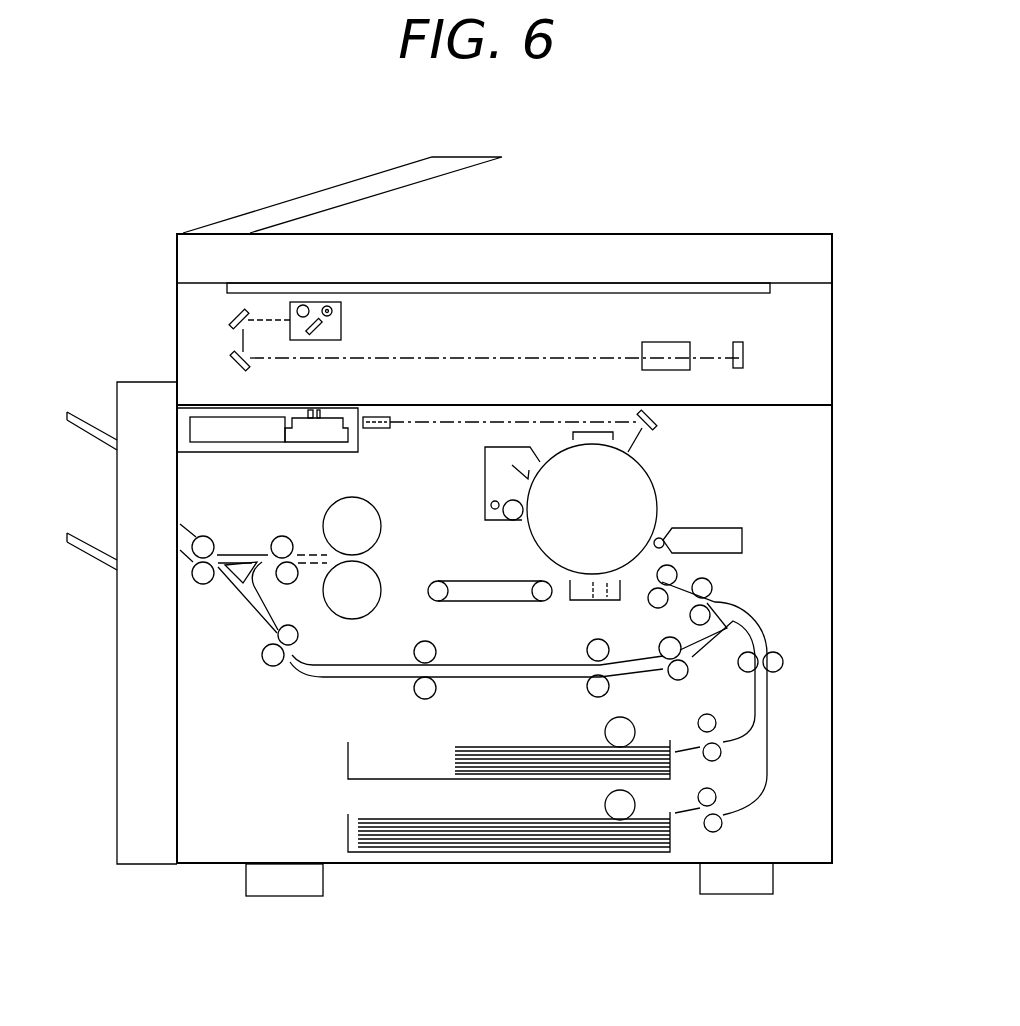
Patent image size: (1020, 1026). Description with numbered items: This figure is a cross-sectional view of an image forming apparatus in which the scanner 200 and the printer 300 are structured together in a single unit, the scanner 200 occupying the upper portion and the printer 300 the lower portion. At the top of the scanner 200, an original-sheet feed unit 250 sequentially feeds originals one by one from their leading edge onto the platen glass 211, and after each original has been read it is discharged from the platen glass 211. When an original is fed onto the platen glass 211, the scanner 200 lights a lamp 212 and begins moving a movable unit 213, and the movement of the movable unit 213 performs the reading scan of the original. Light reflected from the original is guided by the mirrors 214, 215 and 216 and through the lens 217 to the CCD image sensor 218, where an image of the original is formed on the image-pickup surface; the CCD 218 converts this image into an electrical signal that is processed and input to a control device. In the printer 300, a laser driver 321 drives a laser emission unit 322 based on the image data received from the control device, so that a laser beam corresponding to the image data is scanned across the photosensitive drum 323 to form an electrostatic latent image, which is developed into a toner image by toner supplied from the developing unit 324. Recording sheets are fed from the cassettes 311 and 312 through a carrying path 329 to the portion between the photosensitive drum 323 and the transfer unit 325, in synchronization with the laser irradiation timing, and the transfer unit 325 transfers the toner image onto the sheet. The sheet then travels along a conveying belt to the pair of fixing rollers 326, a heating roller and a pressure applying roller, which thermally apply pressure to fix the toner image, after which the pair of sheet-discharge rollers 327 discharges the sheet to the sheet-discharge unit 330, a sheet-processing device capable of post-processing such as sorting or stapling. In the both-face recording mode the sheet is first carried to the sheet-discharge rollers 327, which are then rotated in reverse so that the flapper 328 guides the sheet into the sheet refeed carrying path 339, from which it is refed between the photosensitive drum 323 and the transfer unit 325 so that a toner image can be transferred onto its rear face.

The scanner 200 is at (832, 333).
The original-sheet feed unit 250 is at (325, 190).
The platen glass 211 is at (583, 293).
The lamp 212 is at (327, 306).
The movable unit 213 is at (342, 315).
The mirror 214 is at (323, 331).
The mirror 215 is at (232, 313).
The mirror 216 is at (234, 361).
The lens 217 is at (672, 342).
The CCD image sensor 218 is at (739, 342).
The printer 300 is at (832, 630).
The sheet-discharge unit 330 is at (117, 640).
The laser driver 321 is at (223, 443).
The laser emission unit 322 is at (308, 410).
The photosensitive drum 323 is at (649, 478).
The developing unit 324 is at (745, 541).
The transfer unit 325 is at (578, 600).
The pair of fixing rollers 326 is at (372, 570).
The pair of sheet-discharge rollers 327 is at (195, 570).
The flapper 328 is at (241, 587).
The conveyance path 329 is at (410, 680).
The sheet refeed carrying path 339 is at (497, 679).
The cassette 311 is at (347, 760).
The cassette 312 is at (347, 832).